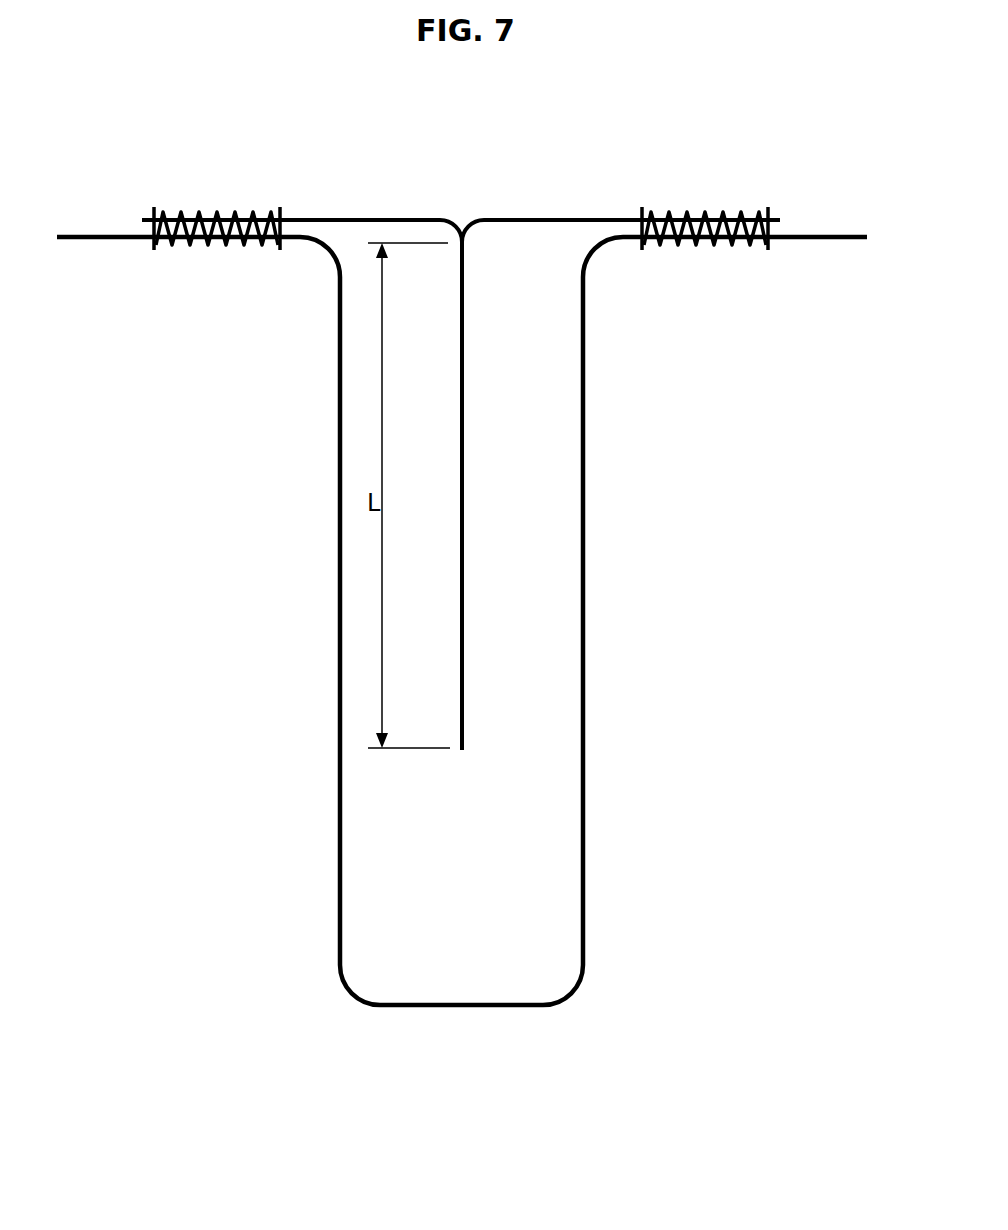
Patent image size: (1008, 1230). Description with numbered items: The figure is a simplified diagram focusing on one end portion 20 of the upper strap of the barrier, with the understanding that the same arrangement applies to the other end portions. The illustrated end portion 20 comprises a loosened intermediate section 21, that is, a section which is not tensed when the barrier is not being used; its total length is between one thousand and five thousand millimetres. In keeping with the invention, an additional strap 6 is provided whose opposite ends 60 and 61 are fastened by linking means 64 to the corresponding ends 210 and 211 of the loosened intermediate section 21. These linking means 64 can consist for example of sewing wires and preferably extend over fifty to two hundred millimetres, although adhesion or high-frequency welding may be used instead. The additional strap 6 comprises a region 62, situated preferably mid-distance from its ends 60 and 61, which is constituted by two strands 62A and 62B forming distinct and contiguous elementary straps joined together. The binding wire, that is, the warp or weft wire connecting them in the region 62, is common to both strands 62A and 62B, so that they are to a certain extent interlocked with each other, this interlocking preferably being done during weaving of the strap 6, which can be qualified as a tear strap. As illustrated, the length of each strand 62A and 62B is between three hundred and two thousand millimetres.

The additional strap 6 is at (461, 430).
The end portion of the upper strap 20 is at (462, 573).
The loosened intermediate section 21 is at (622, 616).
The end of the additional strap 60 is at (291, 218).
The end of the additional strap 61 is at (618, 218).
The region of the additional strap 62 is at (461, 485).
The strand 62A is at (459, 520).
The strand 62B is at (463, 588).
The linking means 64 is at (711, 186).
The end of the loosened intermediate section 210 is at (115, 212).
The end of the loosened intermediate section 211 is at (807, 216).